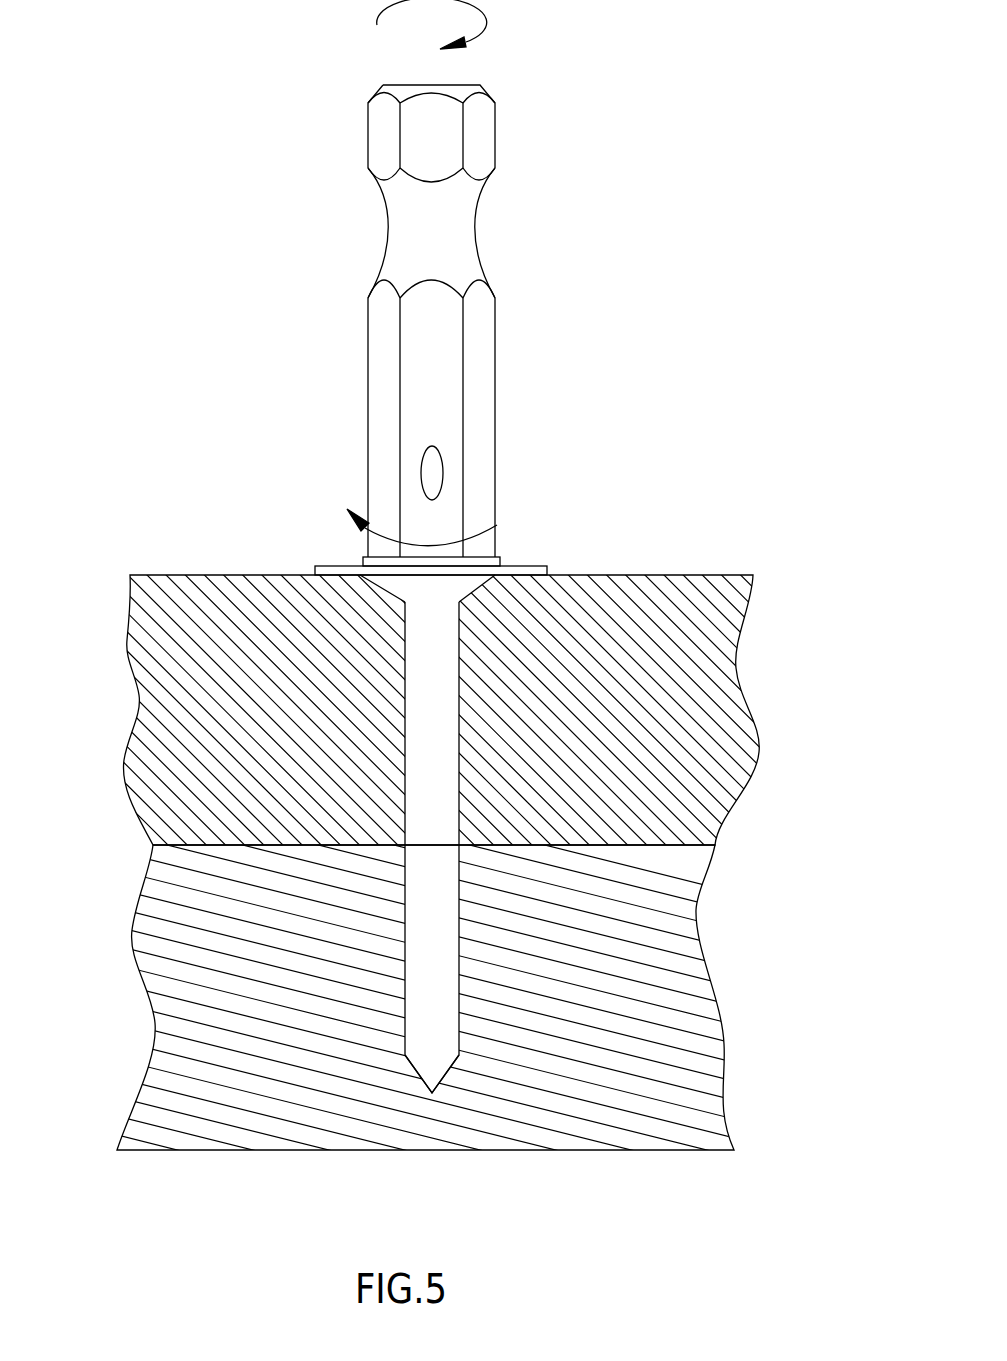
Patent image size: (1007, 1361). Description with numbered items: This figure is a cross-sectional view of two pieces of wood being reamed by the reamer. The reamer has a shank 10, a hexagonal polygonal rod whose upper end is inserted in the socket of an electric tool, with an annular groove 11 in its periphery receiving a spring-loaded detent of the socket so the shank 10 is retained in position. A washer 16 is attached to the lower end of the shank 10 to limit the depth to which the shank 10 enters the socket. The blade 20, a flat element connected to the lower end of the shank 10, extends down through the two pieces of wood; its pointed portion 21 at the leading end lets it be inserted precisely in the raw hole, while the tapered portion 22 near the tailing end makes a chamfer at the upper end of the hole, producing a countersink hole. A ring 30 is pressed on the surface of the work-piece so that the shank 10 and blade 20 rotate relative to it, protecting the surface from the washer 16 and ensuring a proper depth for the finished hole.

The shank 10 is at (529, 283).
The annular groove 11 is at (455, 228).
The washer 16 is at (498, 557).
The blade 20 is at (585, 808).
The pointed portion 21 is at (450, 1075).
The tapered portion 22 is at (478, 603).
The ring 30 is at (355, 567).